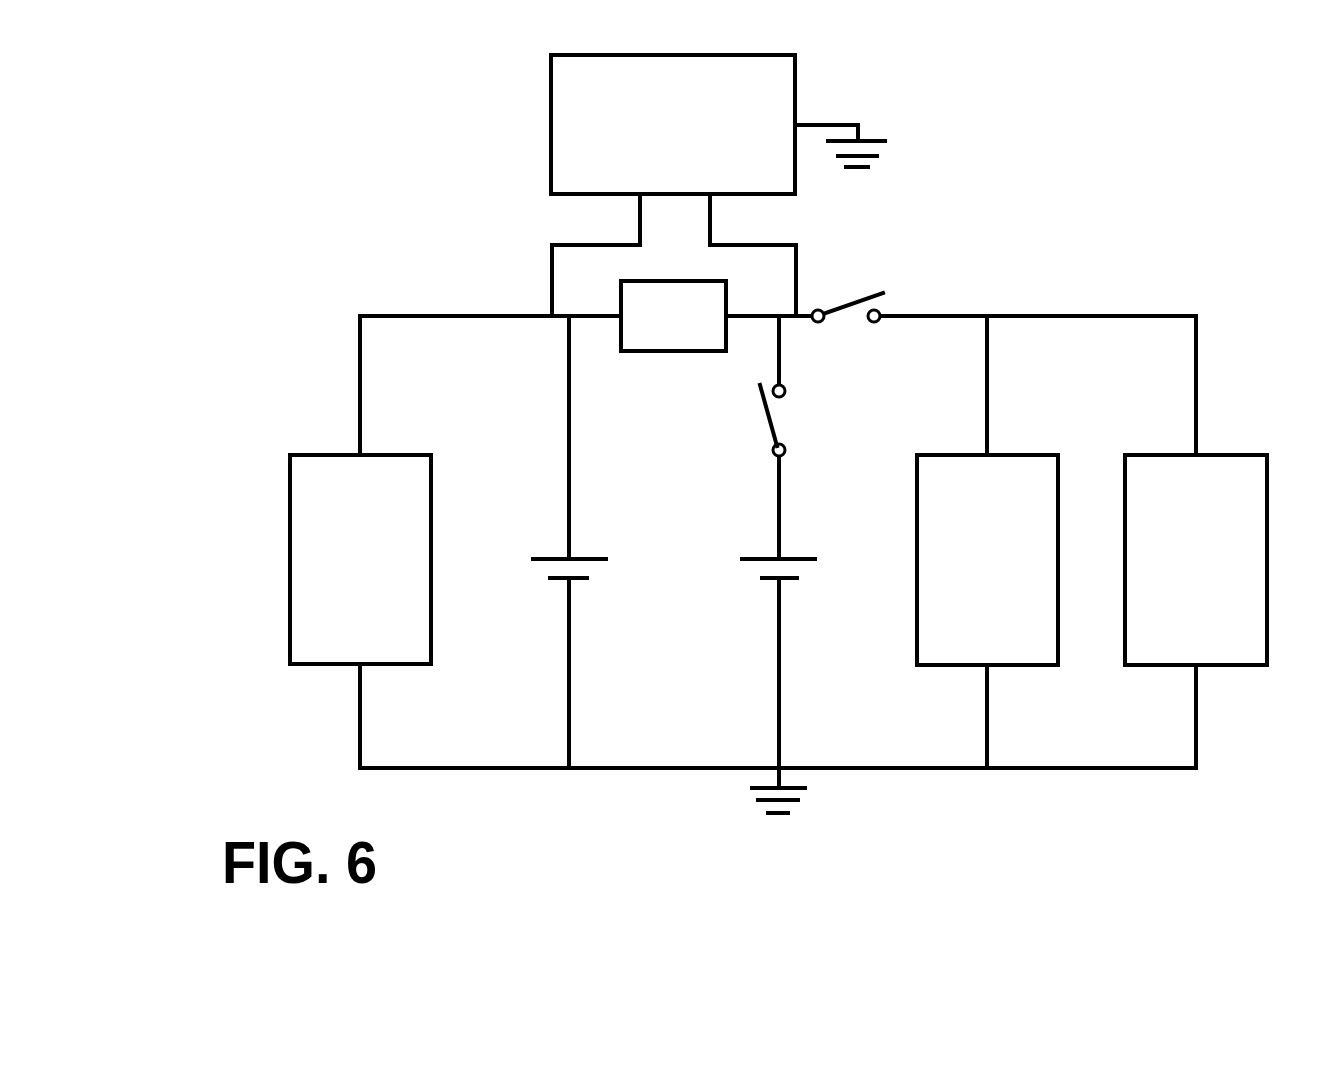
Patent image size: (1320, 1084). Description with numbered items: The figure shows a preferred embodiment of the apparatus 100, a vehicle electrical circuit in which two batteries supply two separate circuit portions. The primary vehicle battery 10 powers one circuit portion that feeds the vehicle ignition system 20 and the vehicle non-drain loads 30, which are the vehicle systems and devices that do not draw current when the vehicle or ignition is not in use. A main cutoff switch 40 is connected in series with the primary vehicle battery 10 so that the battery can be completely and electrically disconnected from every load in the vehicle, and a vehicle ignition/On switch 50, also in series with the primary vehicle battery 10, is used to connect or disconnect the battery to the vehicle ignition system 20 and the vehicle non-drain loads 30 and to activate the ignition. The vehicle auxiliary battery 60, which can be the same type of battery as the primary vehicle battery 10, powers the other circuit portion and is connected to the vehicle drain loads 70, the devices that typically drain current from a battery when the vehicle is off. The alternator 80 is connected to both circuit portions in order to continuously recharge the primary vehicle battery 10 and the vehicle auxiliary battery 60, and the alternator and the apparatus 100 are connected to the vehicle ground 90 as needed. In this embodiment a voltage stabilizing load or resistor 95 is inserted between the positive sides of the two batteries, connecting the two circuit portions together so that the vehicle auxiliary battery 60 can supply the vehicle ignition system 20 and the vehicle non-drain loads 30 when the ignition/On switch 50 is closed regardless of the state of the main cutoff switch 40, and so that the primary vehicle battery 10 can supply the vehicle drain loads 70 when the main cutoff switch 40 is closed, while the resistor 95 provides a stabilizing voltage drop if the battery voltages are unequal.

The primary vehicle battery 10 is at (797, 557).
The vehicle ignition system 20 is at (1015, 455).
The vehicle non-drain loads 30 is at (1232, 455).
The main cutoff switch 40 is at (785, 425).
The vehicle ignition/On switch 50 is at (842, 325).
The vehicle auxiliary battery 60 is at (587, 557).
The vehicle drain loads 70 is at (290, 522).
The vehicle alternator 80 is at (550, 125).
The vehicle ground 90 is at (870, 138).
The voltage stabilizing load or resistor 95 is at (675, 351).
The apparatus 100 is at (245, 688).